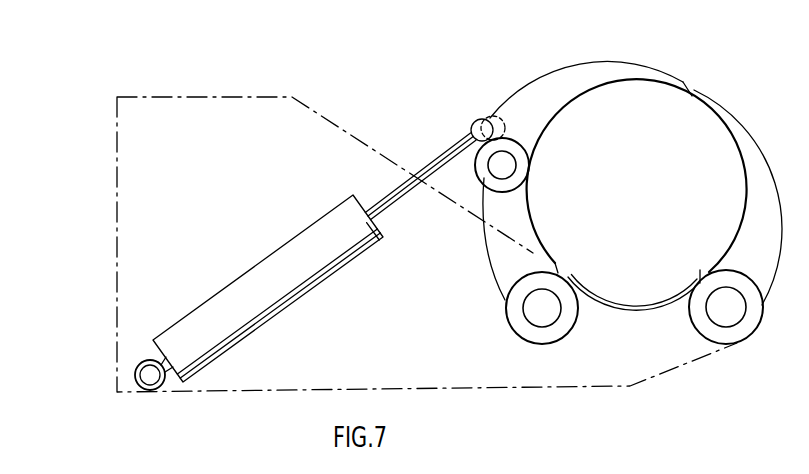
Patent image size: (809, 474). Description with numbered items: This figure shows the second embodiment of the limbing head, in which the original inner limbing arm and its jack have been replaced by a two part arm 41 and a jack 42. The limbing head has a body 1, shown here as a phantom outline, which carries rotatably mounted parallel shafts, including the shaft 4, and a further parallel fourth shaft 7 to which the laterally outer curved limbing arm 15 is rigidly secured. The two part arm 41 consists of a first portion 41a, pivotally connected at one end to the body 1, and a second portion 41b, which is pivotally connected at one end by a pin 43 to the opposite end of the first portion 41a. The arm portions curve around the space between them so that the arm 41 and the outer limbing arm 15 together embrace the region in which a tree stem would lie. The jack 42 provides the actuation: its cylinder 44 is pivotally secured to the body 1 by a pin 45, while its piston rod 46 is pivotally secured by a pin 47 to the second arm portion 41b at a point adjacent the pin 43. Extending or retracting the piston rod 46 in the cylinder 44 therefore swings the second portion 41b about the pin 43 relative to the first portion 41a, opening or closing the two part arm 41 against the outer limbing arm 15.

The body 1 is at (207, 104).
The shaft 4 is at (543, 320).
The fourth shaft 7 is at (733, 315).
The laterally outer curved limbing arm 15 is at (740, 128).
The two part arm 41 is at (570, 163).
The first portion 41a is at (517, 219).
The second portion 41b is at (575, 72).
The jack 42 is at (268, 288).
The pin 43 is at (508, 165).
The cylinder 44 is at (207, 306).
The pin 45 is at (143, 372).
The piston rod 46 is at (442, 160).
The pin 47 is at (479, 119).